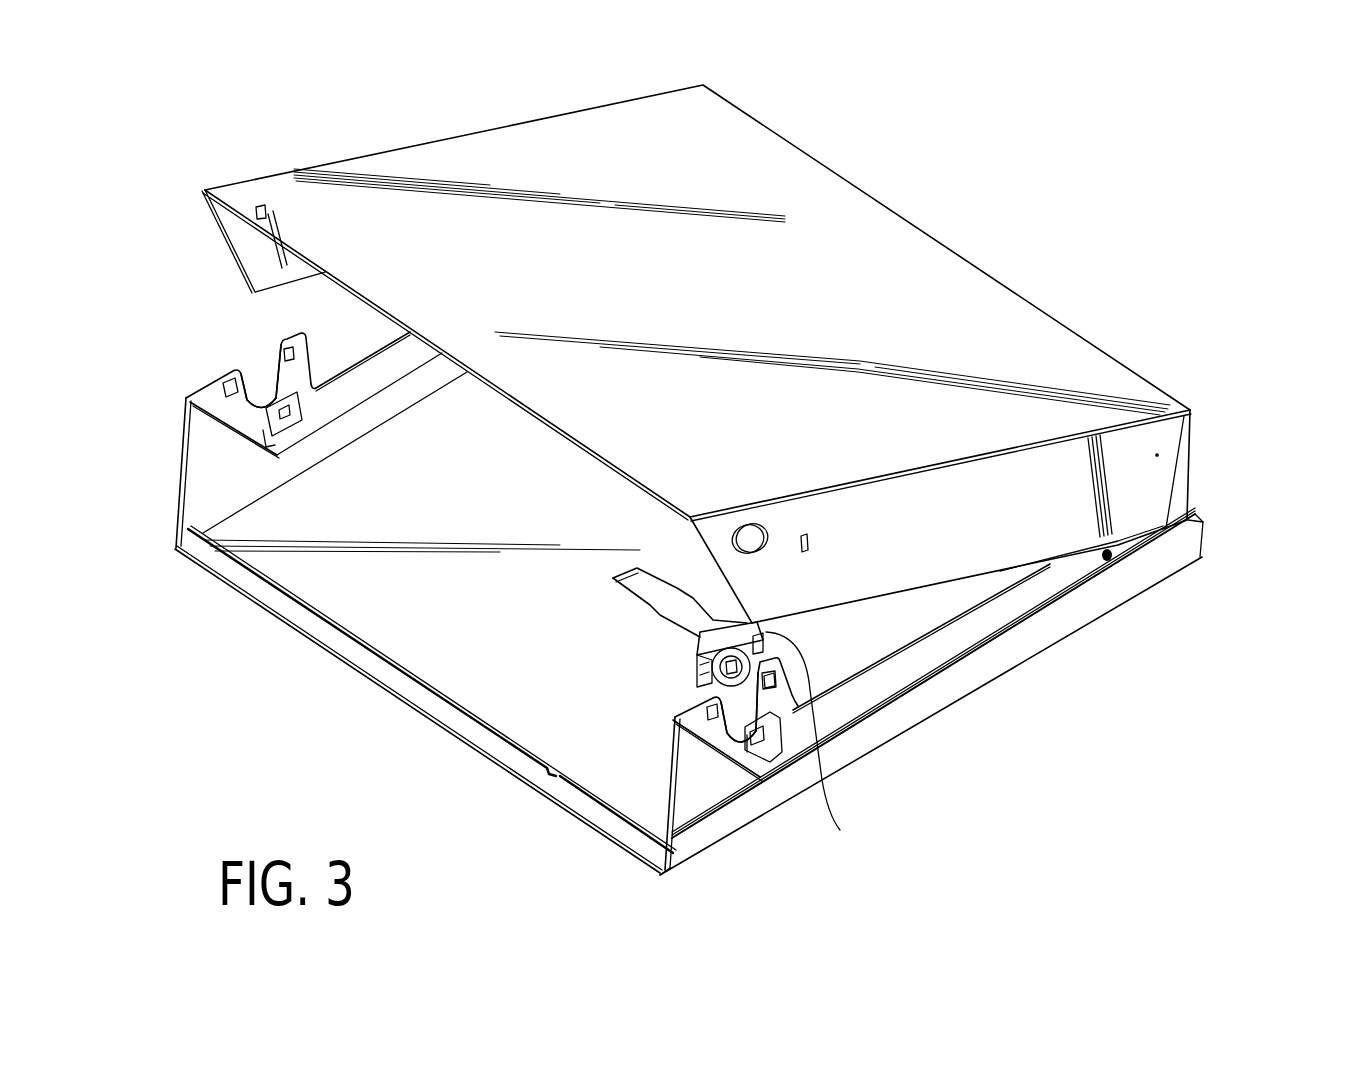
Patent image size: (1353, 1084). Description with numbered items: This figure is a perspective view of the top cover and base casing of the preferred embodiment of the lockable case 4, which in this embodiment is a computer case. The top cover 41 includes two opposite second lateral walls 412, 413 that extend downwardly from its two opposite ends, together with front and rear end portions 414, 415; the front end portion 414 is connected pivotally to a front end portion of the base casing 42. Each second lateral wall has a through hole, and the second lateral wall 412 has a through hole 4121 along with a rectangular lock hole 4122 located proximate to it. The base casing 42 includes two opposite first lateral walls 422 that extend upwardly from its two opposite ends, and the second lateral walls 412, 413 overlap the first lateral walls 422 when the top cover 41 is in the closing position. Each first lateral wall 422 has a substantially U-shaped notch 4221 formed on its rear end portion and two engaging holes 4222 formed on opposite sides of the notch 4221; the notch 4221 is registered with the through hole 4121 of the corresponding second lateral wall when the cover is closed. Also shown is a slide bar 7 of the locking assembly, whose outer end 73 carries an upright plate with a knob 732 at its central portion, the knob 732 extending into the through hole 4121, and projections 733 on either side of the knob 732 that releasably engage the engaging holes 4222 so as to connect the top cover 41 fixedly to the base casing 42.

The lockable case 4 is at (843, 180).
The top cover 41 is at (1048, 342).
The second lateral wall 412 is at (1158, 445).
The second lateral wall 413 is at (208, 354).
The front end portion 414 is at (873, 220).
The rear end portion 415 is at (553, 408).
The through hole 4121 is at (742, 522).
The rectangular lock hole 4122 is at (803, 535).
The base casing 42 is at (1170, 565).
The first lateral wall 422 is at (198, 473).
The U-shaped notch 4221 is at (243, 405).
The engaging hole 4222 is at (768, 775).
The slide bar 7 is at (630, 606).
The outer end 73 is at (765, 628).
The knob 732 is at (693, 653).
The projection 733 is at (772, 683).